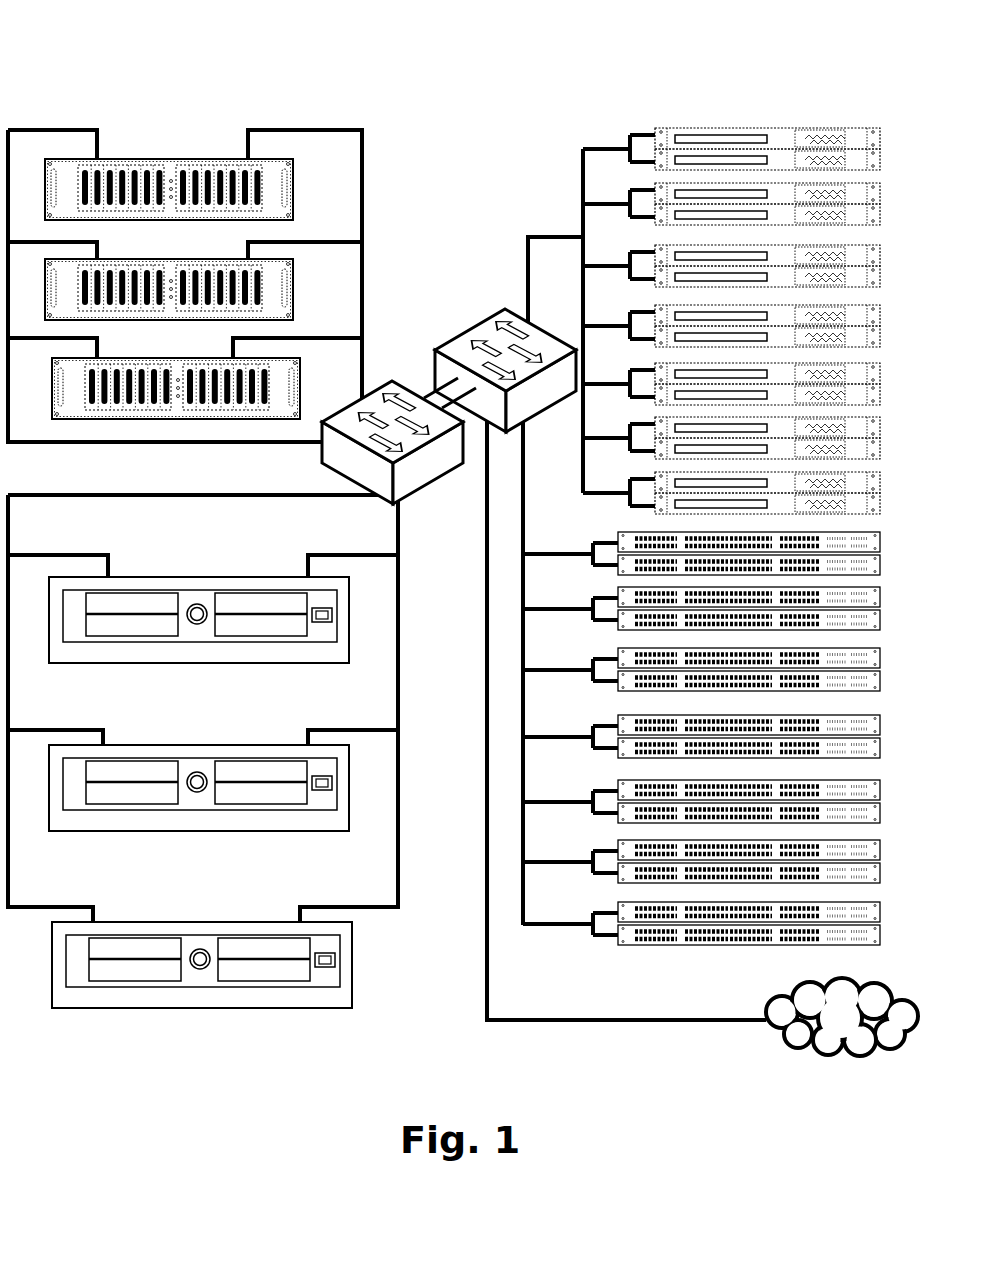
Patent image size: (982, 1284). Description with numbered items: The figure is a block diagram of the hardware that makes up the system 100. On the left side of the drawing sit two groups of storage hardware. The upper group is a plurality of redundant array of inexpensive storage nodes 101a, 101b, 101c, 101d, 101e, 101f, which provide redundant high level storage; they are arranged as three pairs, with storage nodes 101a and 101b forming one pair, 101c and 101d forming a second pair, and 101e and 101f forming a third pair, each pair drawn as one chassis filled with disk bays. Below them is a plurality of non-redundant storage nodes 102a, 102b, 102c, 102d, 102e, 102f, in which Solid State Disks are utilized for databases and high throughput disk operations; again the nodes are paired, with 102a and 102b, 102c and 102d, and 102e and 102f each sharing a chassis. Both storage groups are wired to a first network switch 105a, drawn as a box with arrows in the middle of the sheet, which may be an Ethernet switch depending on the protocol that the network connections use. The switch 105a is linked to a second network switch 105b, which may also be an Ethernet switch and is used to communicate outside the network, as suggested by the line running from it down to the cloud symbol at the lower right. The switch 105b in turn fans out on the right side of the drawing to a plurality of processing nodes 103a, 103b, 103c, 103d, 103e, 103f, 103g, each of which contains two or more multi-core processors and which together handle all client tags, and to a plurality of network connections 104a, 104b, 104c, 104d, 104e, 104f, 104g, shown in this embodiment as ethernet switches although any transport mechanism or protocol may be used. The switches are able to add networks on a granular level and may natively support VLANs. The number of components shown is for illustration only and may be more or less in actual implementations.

The system 100 is at (463, 528).
The redundant array of inexpensive storage node 101a is at (169, 180).
The redundant array of inexpensive storage node 101b is at (219, 175).
The redundant array of inexpensive storage node 101c is at (169, 280).
The redundant array of inexpensive storage node 101d is at (219, 275).
The redundant array of inexpensive storage node 101e is at (176, 378).
The redundant array of inexpensive storage node 101f is at (226, 373).
The non-redundant storage node 102a is at (199, 601).
The non-redundant storage node 102b is at (261, 587).
The non-redundant storage node 102c is at (199, 772).
The non-redundant storage node 102d is at (261, 759).
The non-redundant storage node 102e is at (202, 950).
The non-redundant storage node 102f is at (264, 936).
The processing node 103a is at (731, 149).
The processing node 103b is at (731, 204).
The processing node 103c is at (731, 266).
The processing node 103d is at (731, 326).
The processing node 103e is at (731, 384).
The processing node 103f is at (731, 438).
The processing node 103g is at (731, 493).
The network connection 104a is at (701, 553).
The network connection 104b is at (701, 608).
The network connection 104c is at (701, 669).
The network connection 104d is at (701, 736).
The network connection 104e is at (701, 801).
The network connection 104f is at (701, 861).
The network connection 104g is at (701, 923).
The network switch 105a is at (392, 447).
The network switch 105b is at (505, 370).